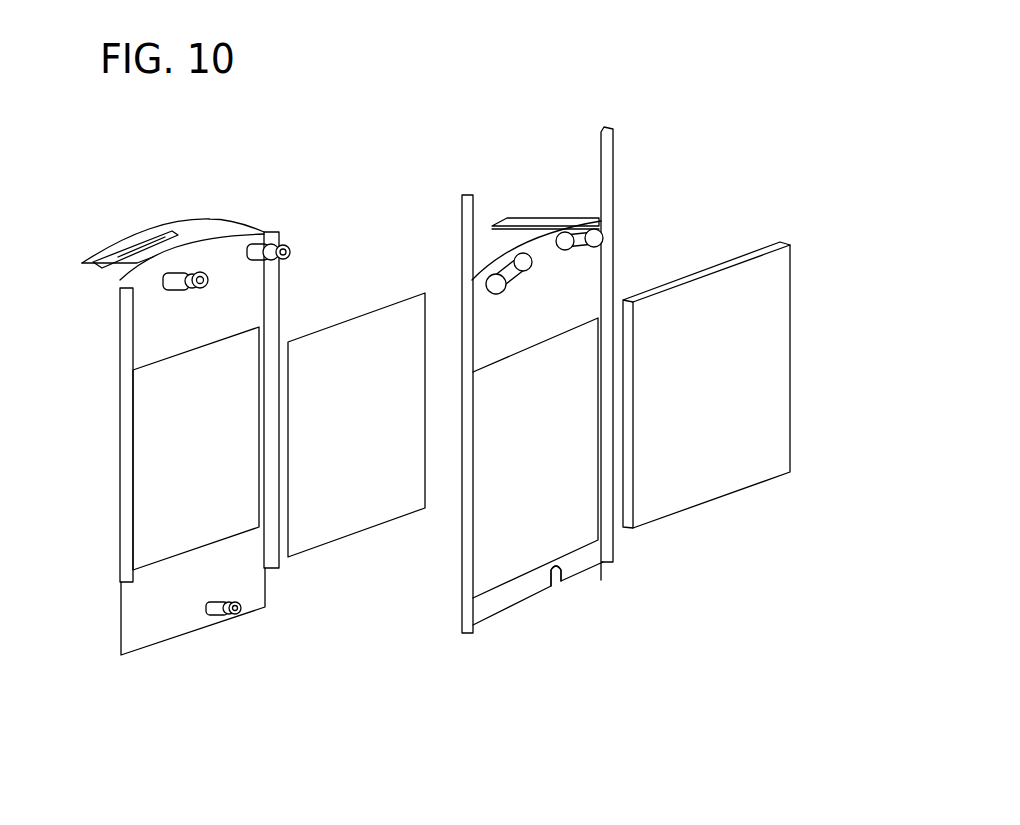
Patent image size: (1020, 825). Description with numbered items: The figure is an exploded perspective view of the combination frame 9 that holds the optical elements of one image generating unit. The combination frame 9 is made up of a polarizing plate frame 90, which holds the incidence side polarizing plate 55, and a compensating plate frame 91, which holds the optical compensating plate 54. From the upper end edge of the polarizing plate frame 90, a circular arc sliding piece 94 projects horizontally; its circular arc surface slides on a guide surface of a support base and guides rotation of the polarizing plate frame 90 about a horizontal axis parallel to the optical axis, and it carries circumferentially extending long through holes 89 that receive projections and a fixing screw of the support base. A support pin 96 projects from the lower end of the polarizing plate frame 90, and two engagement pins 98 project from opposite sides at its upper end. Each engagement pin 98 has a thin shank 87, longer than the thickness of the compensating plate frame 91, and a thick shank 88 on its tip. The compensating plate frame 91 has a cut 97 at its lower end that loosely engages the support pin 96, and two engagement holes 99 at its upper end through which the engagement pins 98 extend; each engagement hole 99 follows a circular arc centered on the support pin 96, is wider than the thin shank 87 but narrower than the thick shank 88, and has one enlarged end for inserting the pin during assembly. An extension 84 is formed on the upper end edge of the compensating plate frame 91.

The combination frame 9 is at (653, 134).
The optical compensating plate 54 is at (713, 487).
The incidence side polarizing plate 55 is at (352, 520).
The extension 84 is at (520, 222).
The thin shank 87 is at (197, 266).
The thick shank 88 is at (207, 292).
The through hole 89 is at (104, 248).
The polarizing plate frame 90 is at (135, 670).
The compensating plate frame 91 is at (461, 643).
The circular arc sliding piece 94 is at (197, 228).
The support pin 96 is at (215, 615).
The cut 97 is at (556, 586).
The engagement pin 98 is at (268, 242).
The engagement hole 99 is at (492, 283).